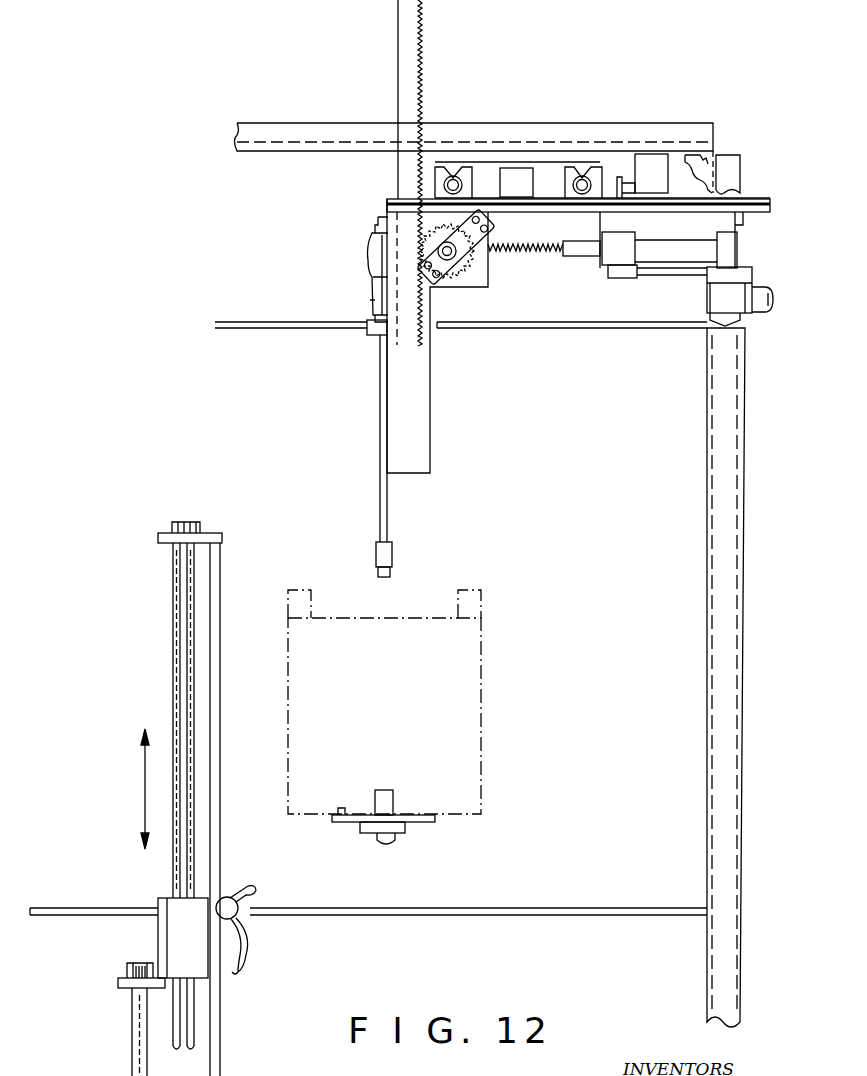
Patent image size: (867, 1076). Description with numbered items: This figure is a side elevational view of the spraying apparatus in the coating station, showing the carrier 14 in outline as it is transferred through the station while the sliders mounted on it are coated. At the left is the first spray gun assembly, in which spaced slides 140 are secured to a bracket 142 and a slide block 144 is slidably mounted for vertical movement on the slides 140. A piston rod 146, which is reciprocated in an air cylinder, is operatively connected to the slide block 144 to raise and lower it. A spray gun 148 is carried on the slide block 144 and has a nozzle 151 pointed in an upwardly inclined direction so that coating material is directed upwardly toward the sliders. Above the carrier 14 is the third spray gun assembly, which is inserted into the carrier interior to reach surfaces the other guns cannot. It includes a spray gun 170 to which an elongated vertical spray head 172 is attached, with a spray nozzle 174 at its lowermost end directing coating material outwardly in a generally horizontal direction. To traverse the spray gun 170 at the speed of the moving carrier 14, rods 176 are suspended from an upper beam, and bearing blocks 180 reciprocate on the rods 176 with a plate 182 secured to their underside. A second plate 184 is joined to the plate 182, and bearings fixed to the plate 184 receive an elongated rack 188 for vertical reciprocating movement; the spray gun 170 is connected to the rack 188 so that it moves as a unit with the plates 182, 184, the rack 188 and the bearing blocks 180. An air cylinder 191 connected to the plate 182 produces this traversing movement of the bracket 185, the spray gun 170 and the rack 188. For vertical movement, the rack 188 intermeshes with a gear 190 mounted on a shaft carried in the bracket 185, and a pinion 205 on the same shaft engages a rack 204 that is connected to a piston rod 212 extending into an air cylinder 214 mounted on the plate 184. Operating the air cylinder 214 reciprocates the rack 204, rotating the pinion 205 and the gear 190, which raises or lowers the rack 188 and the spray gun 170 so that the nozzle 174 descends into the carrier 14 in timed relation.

The carrier 14 is at (452, 749).
The slides 140 is at (183, 667).
The bracket 142 is at (218, 615).
The slide block 144 is at (175, 922).
The piston rod 146 is at (140, 1044).
The spray gun 148 is at (245, 915).
The nozzle 151 is at (250, 892).
The spray gun 170 is at (372, 262).
The spray head 172 is at (383, 498).
The spray nozzle 174 is at (392, 558).
The rods 176 is at (457, 180).
The bearing blocks 180 is at (440, 168).
The plate 182 is at (538, 200).
The second plate 184 is at (388, 206).
The bracket 185 is at (418, 388).
The rack 188 is at (410, 32).
The gear 190 is at (478, 283).
The air cylinder 191 is at (519, 178).
The rack 204 is at (539, 250).
The pinion 205 is at (452, 272).
The piston rod 212 is at (590, 257).
The air cylinder 214 is at (658, 245).